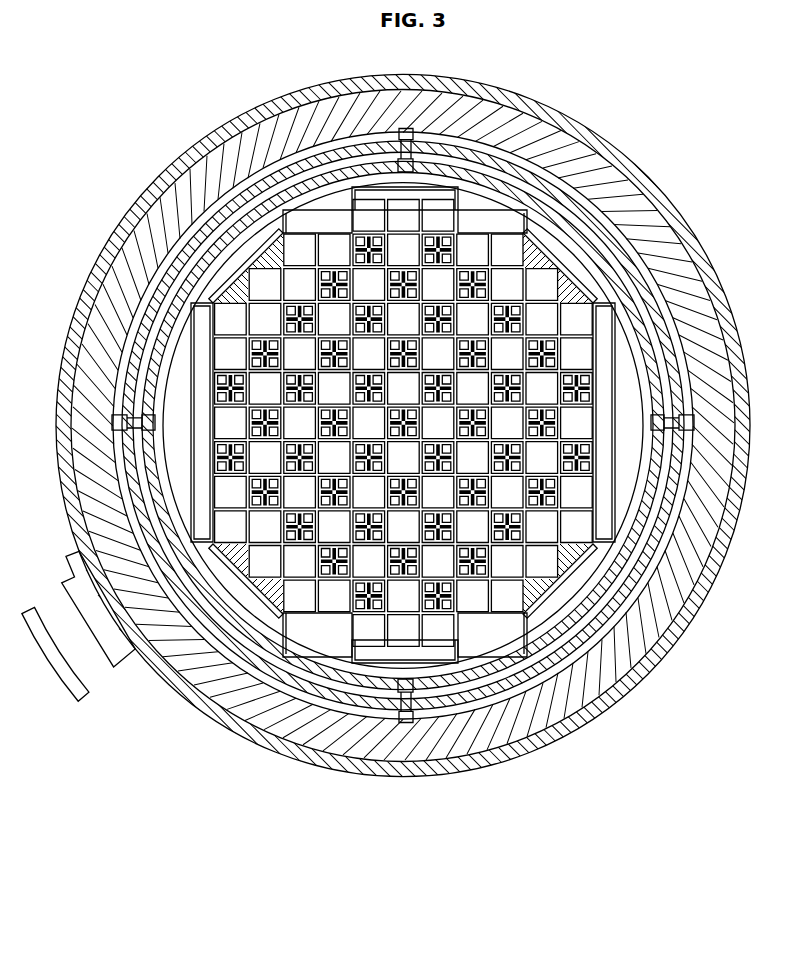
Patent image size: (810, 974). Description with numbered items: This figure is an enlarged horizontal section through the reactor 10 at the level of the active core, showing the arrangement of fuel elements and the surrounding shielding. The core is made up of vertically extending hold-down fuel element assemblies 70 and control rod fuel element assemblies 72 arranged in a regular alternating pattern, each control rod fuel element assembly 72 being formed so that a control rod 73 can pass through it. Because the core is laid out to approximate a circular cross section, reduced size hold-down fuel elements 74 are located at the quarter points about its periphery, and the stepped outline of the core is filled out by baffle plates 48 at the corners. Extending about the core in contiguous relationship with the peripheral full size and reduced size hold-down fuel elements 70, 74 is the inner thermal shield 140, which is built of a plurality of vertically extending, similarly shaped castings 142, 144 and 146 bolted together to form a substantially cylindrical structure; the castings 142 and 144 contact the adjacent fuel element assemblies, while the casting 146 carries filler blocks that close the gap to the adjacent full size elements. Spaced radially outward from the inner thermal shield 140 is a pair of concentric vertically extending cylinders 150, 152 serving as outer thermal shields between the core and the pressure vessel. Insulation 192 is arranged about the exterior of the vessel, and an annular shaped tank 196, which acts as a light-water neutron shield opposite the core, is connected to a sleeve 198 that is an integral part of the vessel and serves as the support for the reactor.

The reactor vessel assembly 10 is at (550, 741).
The baffle plate 48 is at (576, 587).
The hold-down fuel element assembly 70 is at (495, 342).
The control rod fuel element assembly 72 is at (460, 272).
The control rod 73 is at (566, 388).
The reduced size hold-down fuel element 74 is at (193, 413).
The inner thermal shield 140 is at (403, 398).
The casting 142 is at (385, 207).
The casting 144 is at (541, 204).
The casting 146 is at (588, 263).
The outer thermal shield cylinder 150 is at (620, 284).
The outer thermal shield cylinder 152 is at (648, 305).
The insulation 192 is at (693, 597).
The annular shaped tank 196 is at (66, 678).
The sleeve 198 is at (77, 556).